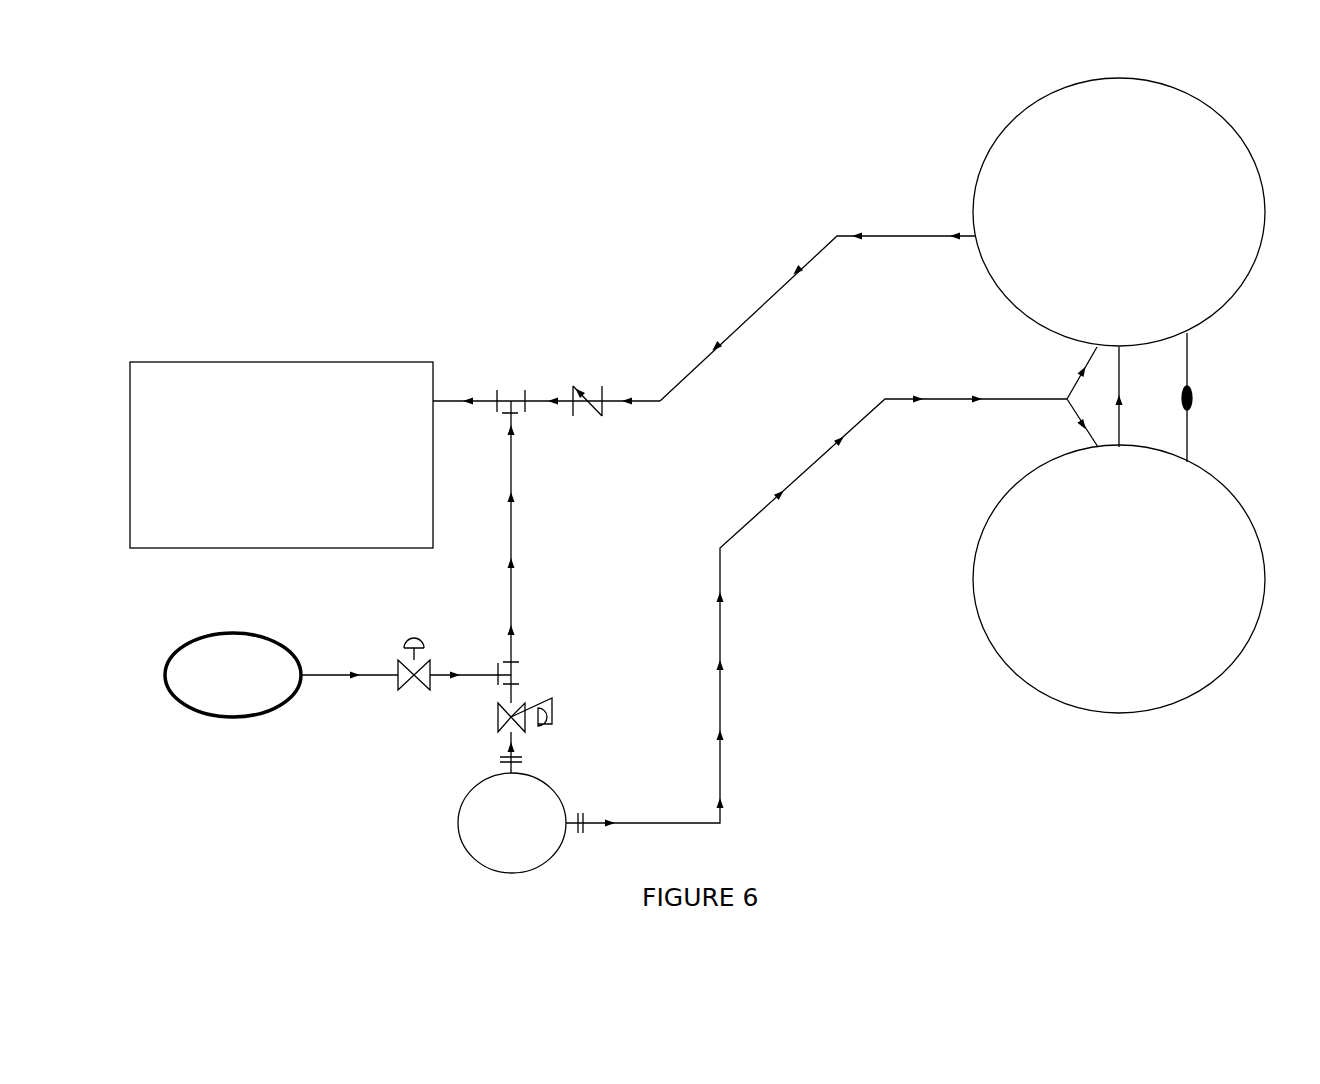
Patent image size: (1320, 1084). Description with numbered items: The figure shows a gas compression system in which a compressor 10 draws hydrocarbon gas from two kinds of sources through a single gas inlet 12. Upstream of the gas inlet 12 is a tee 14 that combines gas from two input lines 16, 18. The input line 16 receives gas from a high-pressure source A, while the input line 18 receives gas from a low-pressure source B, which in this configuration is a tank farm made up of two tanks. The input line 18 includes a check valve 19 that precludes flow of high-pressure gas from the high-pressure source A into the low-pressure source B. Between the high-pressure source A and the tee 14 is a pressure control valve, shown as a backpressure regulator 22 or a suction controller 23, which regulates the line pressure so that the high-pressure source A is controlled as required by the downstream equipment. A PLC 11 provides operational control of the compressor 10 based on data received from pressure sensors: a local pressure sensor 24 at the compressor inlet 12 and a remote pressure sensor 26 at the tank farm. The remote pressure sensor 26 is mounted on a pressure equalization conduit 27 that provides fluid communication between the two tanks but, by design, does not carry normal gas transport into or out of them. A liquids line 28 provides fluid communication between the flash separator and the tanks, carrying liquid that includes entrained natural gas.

The compressor 10 is at (347, 360).
The PLC 11 is at (281, 455).
The gas inlet 12 is at (433, 401).
The tee 14 is at (511, 401).
The input line 16 is at (511, 603).
The input line 18 is at (781, 288).
The check valve 19 is at (602, 405).
The backpressure regulator 22 is at (517, 695).
The suction controller 23 is at (398, 670).
The pressure sensor 24 is at (436, 401).
The remote pressure sensor 26 is at (1193, 398).
The pressure equalization conduit 27 is at (1183, 437).
The liquids line 28 is at (720, 772).
The high-pressure source A is at (190, 710).
The low-pressure source B is at (985, 125).